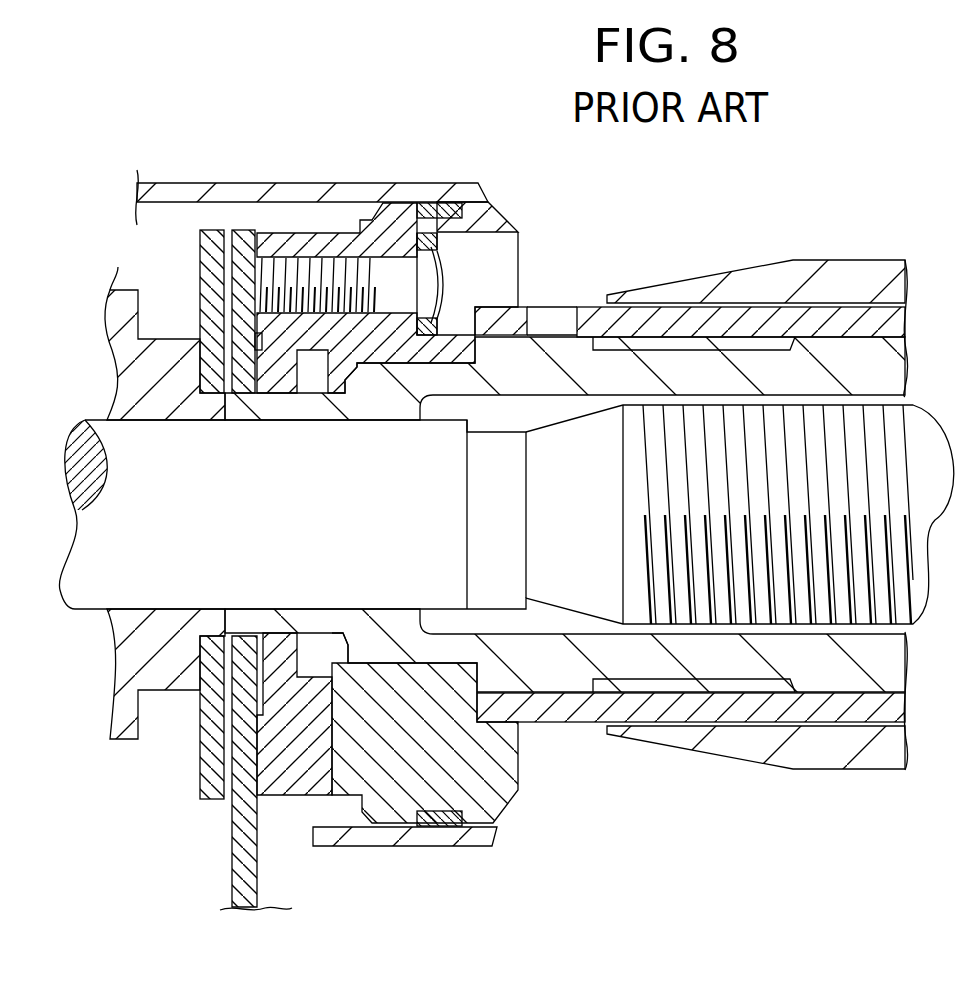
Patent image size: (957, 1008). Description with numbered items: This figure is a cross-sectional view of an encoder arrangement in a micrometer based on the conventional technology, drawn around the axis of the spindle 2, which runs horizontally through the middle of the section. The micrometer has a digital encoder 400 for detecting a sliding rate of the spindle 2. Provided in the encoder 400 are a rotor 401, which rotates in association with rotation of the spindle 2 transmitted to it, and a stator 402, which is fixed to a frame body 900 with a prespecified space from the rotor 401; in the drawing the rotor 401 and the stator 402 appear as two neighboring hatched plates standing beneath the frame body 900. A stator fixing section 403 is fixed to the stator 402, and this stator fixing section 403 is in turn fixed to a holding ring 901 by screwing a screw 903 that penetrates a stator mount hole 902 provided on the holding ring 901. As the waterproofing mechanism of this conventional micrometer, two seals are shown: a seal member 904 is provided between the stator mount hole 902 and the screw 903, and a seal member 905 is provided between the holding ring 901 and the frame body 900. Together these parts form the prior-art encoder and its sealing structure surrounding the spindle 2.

The spindle 2 is at (458, 587).
The digital encoder 400 is at (229, 226).
The rotor 401 is at (207, 230).
The stator 402 is at (247, 232).
The stator fixing section 403 is at (310, 237).
The frame body 900 is at (228, 183).
The holding ring 901 is at (497, 212).
The stator mount hole 902 is at (385, 258).
The screw 903 is at (427, 268).
The seal member 904 is at (465, 203).
The seal member 905 is at (422, 203).